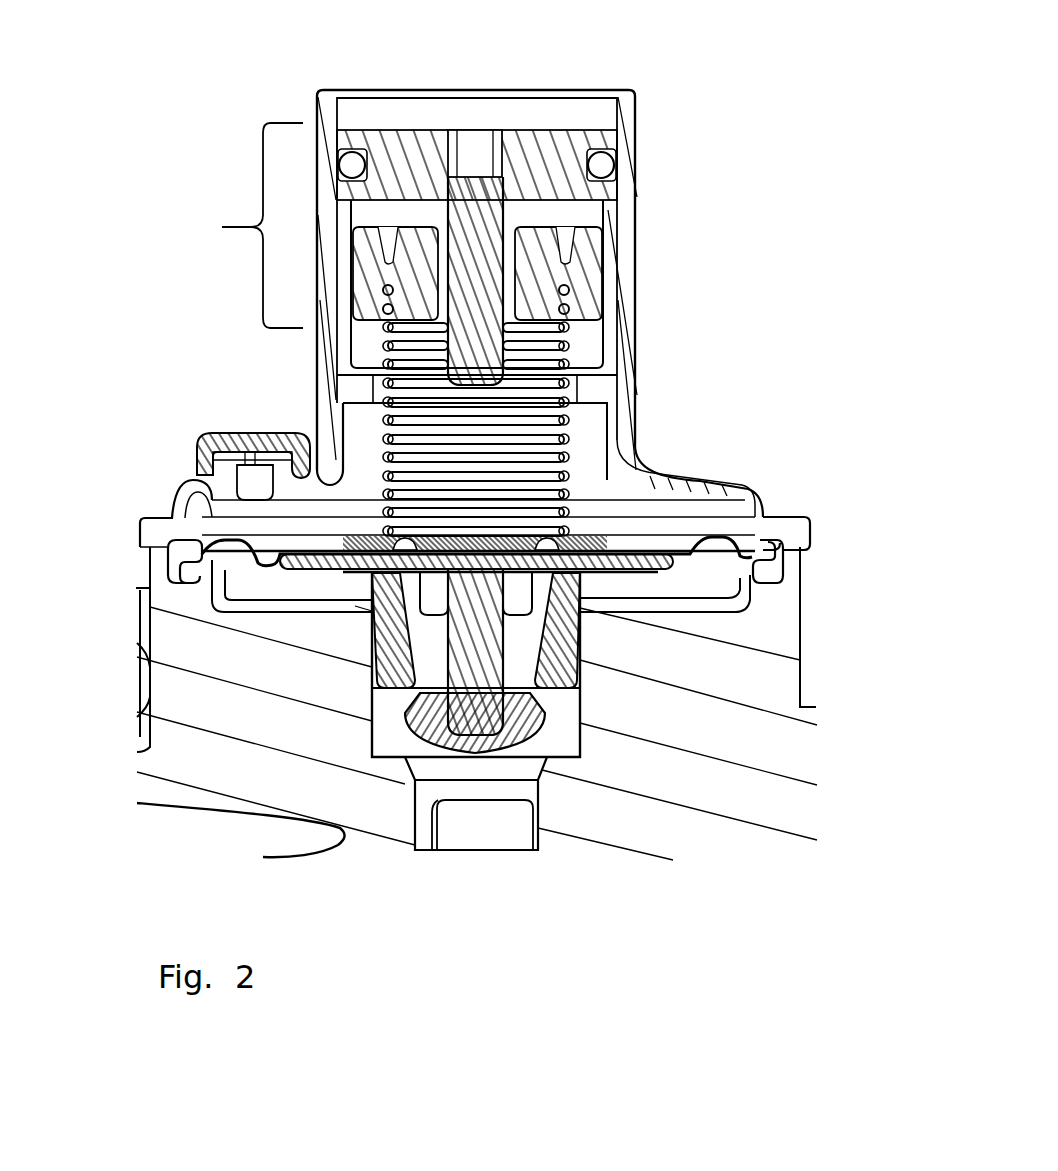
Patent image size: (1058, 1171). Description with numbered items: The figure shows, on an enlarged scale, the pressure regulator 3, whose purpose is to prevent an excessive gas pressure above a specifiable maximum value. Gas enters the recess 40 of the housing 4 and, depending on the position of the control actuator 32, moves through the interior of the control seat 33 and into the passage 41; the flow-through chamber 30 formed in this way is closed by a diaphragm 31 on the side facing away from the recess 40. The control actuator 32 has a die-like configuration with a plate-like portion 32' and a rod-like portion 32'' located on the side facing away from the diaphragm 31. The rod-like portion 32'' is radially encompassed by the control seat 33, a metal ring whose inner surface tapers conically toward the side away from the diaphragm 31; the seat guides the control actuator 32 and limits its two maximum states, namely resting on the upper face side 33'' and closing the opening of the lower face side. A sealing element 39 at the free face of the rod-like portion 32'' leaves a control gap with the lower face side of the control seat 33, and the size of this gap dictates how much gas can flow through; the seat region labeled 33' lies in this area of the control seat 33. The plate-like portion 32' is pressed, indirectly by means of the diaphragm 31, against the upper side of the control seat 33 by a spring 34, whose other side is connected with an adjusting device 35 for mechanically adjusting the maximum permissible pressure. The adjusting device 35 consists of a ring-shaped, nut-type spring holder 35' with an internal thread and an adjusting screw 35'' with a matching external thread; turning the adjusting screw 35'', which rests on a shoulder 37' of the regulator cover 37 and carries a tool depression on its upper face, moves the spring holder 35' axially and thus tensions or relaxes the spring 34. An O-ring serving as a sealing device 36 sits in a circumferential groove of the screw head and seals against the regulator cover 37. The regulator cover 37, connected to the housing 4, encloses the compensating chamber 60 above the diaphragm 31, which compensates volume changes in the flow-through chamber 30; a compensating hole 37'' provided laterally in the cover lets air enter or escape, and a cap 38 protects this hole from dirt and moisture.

The pressure regulator 3 is at (313, 88).
The housing 4 is at (663, 778).
The flow-through chamber 30 is at (743, 533).
The diaphragm 31 is at (717, 555).
The control actuator 32 is at (515, 470).
The plate-like portion 32' is at (407, 469).
The rod-like portion 32'' is at (282, 456).
The control seat 33 is at (604, 630).
The seat cavity 33' is at (645, 593).
The upper face side 33'' is at (523, 555).
The spring 34 is at (570, 377).
The adjusting device 35 is at (235, 225).
The spring holder 35' is at (556, 251).
The adjusting screw 35'' is at (497, 109).
The sealing device 36 is at (599, 158).
The regulator cover 37 is at (542, 236).
The shoulder 37' is at (569, 245).
The compensating hole 37'' is at (189, 412).
The cap 38 is at (277, 438).
The sealing element 39 is at (532, 722).
The recess 40 is at (390, 744).
The passage 41 is at (235, 582).
The compensating chamber 60 is at (599, 505).